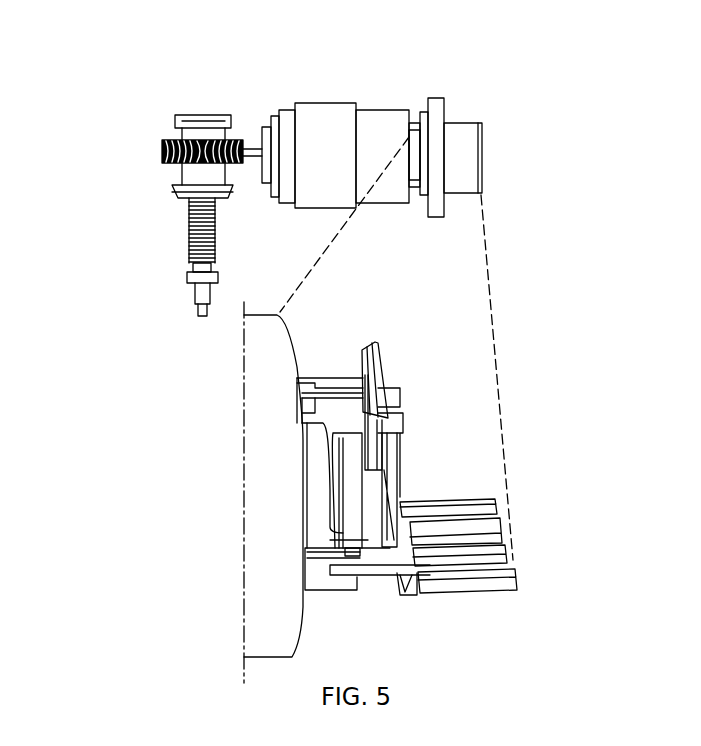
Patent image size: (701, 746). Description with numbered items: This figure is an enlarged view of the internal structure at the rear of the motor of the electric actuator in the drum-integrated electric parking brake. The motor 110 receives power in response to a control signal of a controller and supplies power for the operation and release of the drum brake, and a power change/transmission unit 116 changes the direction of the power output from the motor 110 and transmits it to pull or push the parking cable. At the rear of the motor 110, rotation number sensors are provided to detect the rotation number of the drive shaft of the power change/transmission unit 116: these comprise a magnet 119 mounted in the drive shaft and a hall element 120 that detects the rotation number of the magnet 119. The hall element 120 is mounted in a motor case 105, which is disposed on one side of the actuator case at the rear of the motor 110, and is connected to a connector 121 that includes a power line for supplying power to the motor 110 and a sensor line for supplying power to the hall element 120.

The motor case 105 is at (463, 130).
The motor 110 is at (382, 118).
The power change/transmission unit 116 is at (160, 212).
The magnet 119 is at (353, 555).
The hall element 120 is at (388, 328).
The connector 121 is at (433, 485).